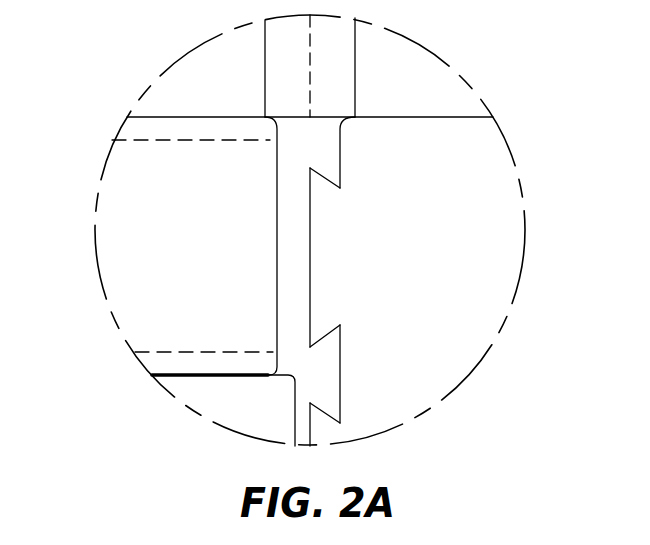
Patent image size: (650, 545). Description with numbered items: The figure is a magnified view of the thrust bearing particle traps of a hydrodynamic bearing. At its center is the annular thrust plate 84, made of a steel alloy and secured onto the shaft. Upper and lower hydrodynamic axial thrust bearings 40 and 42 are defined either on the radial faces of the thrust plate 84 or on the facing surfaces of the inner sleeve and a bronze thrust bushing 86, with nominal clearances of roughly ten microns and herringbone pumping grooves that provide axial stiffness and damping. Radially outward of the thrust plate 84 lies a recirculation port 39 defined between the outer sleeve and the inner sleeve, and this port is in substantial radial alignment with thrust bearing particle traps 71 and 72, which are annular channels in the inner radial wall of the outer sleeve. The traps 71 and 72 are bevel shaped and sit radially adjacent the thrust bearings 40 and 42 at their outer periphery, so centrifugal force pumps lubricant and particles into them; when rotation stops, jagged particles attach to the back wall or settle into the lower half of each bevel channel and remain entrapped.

The thrust bushing 86 is at (417, 98).
The thrust plate 84 is at (204, 268).
The upper hydrodynamic axial thrust bearing 40 is at (163, 141).
The lower hydrodynamic axial thrust bearing 42 is at (183, 352).
The recirculation port 39 is at (404, 272).
The thrust bearing particle trap 71 is at (334, 160).
The thrust bearing particle trap 72 is at (333, 348).